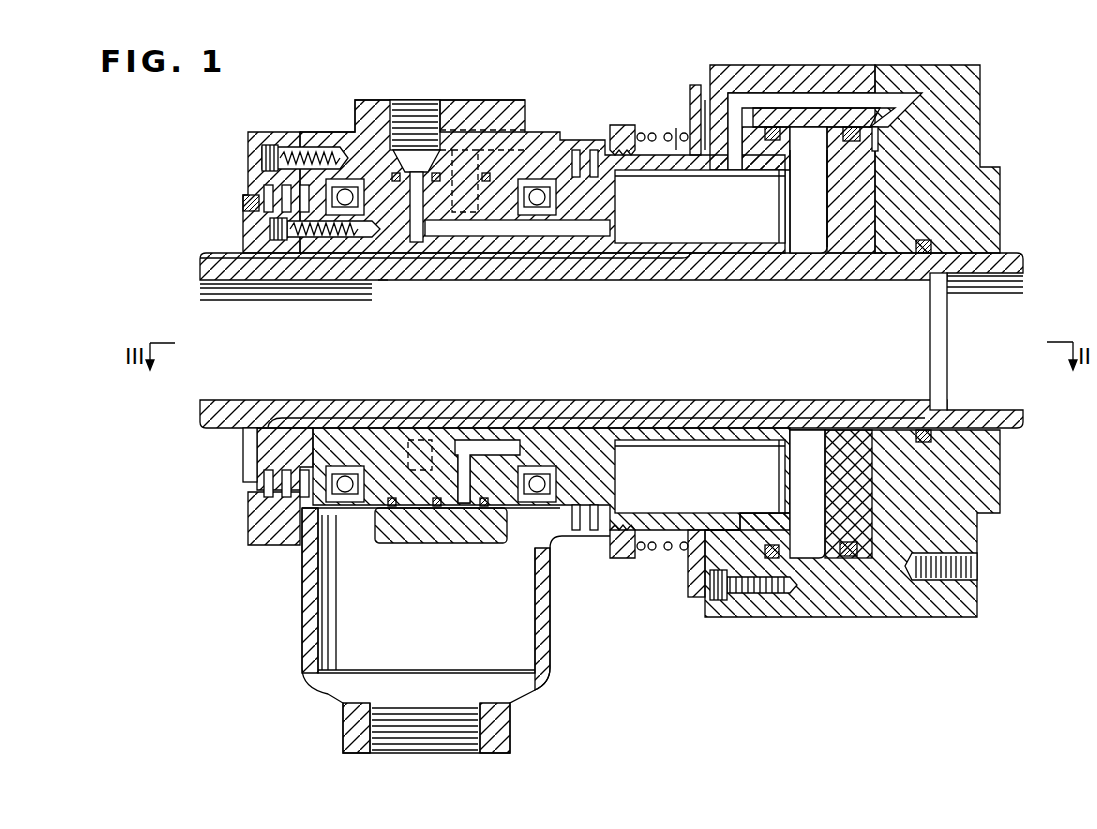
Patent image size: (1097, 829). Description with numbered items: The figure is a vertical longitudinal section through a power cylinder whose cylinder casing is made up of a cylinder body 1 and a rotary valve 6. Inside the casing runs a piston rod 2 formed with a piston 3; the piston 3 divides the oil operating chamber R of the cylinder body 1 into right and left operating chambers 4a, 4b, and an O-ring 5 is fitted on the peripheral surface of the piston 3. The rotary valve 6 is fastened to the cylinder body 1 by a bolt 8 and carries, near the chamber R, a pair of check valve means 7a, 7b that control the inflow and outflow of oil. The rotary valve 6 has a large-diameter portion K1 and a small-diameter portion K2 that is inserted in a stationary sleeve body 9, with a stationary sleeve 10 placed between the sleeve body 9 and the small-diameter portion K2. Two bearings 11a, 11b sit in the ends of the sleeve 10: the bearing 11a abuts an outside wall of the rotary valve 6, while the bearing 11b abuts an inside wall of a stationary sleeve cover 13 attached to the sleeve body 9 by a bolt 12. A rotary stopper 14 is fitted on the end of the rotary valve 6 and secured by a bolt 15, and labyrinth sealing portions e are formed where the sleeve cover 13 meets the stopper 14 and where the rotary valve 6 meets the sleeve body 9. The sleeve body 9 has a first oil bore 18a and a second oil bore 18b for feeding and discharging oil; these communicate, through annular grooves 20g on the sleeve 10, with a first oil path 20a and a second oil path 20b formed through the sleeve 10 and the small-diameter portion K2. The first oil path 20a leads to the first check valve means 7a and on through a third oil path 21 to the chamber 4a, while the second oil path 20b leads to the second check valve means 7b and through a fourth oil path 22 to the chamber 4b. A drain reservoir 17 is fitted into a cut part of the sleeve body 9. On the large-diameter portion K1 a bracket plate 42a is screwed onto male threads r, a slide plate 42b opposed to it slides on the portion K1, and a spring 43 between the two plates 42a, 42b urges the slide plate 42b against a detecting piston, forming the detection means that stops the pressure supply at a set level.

The cylinder body 1 is at (944, 80).
The piston rod 2 is at (200, 268).
The piston 3 is at (860, 200).
The operating chamber 4a is at (878, 135).
The operating chamber 4b is at (808, 135).
The O-ring 5 is at (850, 127).
The rotary valve 6 is at (732, 75).
The first check valve means 7a is at (722, 222).
The second check valve means 7b is at (722, 489).
The bolt 8 is at (712, 580).
The sleeve body 9 is at (540, 150).
The sleeve 10 is at (366, 132).
The bearing 11a is at (556, 198).
The bearing 11b is at (345, 178).
The bolt 12 is at (262, 152).
The sleeve cover 13 is at (248, 181).
The rotary stopper 14 is at (243, 206).
The bolt 15 is at (270, 235).
The drain reservoir 17 is at (438, 632).
The first oil bore 18a is at (418, 100).
The second oil bore 18b is at (488, 100).
The first oil path 20a is at (428, 190).
The second oil path 20b is at (500, 215).
The annular grooves 20g is at (420, 100).
The third oil path 21 is at (772, 100).
The fourth oil path 22 is at (732, 535).
The bracket plate 42a is at (622, 125).
The slide plate 42b is at (694, 95).
The spring 43 is at (650, 132).
The large-diameter portion K1 is at (707, 98).
The small-diameter portion K2 is at (383, 258).
The sealing portions e is at (262, 166).
The male threads r is at (683, 132).
The oil operating chamber R is at (818, 217).